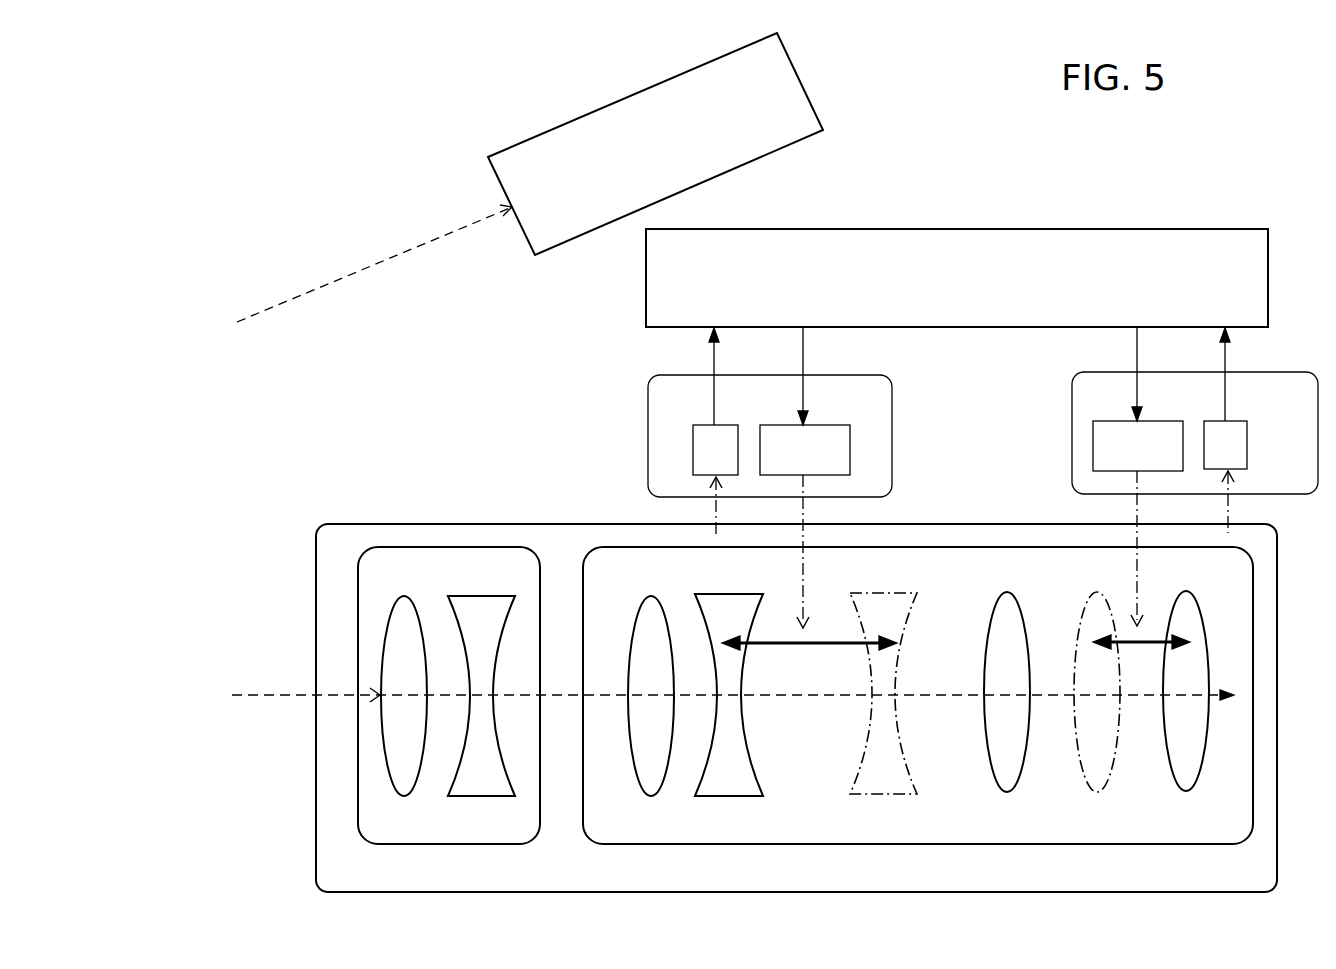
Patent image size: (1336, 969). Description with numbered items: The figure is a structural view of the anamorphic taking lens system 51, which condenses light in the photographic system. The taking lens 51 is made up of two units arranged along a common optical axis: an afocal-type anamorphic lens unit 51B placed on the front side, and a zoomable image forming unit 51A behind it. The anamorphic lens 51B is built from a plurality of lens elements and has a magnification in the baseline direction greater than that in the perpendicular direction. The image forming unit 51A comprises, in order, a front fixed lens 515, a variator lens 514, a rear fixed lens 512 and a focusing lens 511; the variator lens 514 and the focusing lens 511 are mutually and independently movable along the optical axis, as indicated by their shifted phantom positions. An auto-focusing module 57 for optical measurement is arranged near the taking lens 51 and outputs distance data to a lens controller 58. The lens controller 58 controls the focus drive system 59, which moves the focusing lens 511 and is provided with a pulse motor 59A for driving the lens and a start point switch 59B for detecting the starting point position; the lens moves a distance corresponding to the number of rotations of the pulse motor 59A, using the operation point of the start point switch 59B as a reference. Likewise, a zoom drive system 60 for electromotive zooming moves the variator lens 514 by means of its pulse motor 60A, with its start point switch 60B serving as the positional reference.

The anamorphic taking lens system 51 is at (450, 522).
The image forming unit 51A is at (892, 841).
The anamorphic lens unit 51B is at (423, 845).
The focusing lens 511 is at (1200, 777).
The rear fixed lens 512 is at (1020, 777).
The variator lens 514 is at (740, 797).
The front fixed lens 515 is at (650, 797).
The AF module 57 is at (800, 102).
The lens controller 58 is at (1011, 233).
The focus drive system 59 is at (1249, 368).
The pulse motor 59A is at (1148, 430).
The start point switch 59B is at (1236, 430).
The zoom drive system 60 is at (832, 373).
The pulse motor 60A is at (817, 433).
The start point switch 60B is at (720, 430).